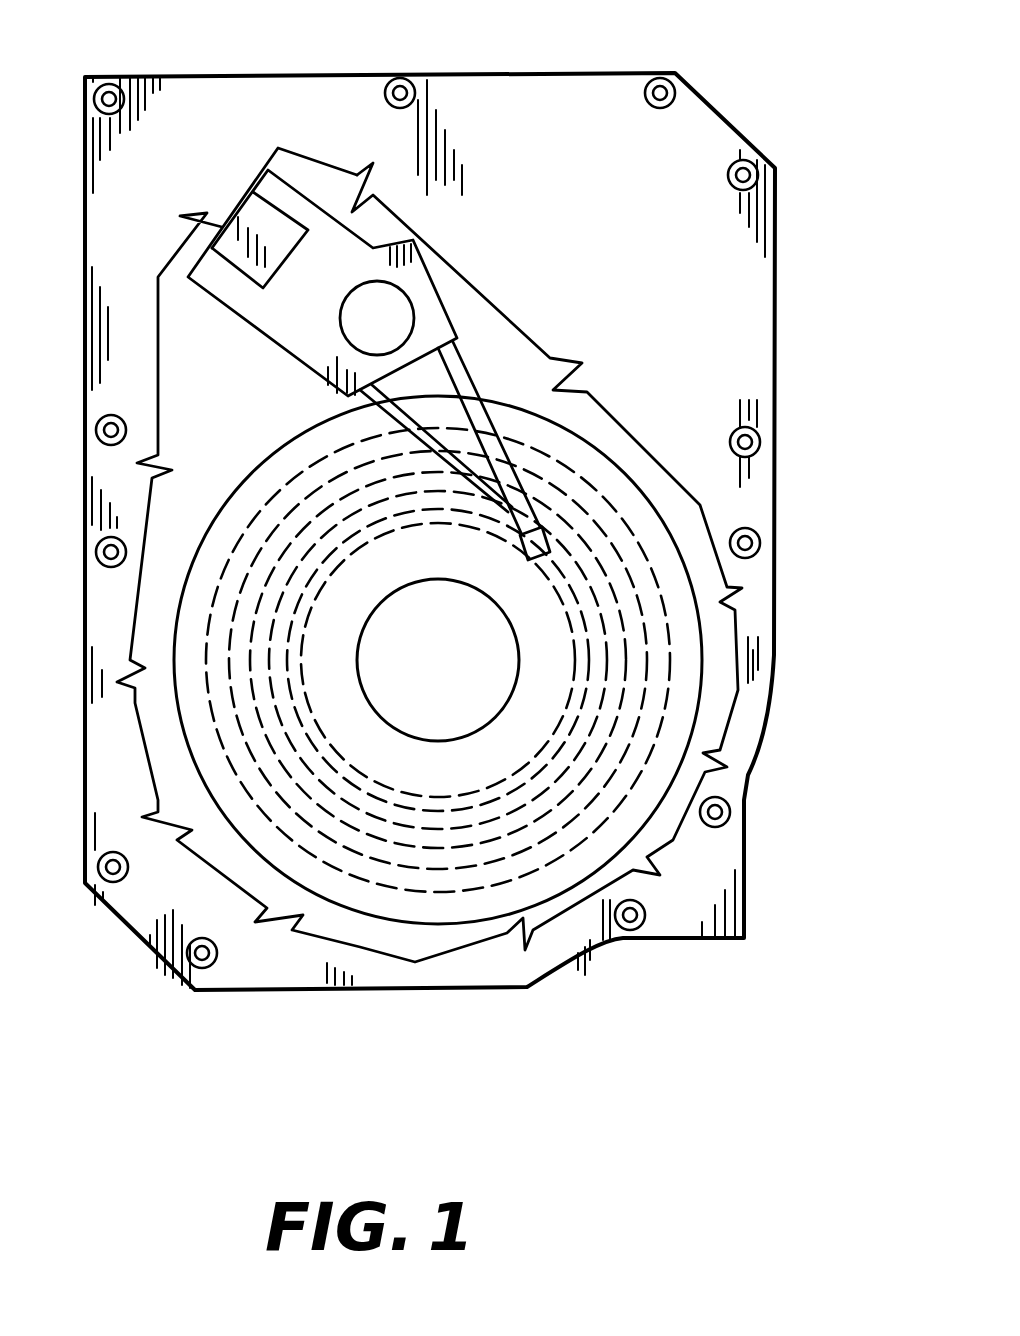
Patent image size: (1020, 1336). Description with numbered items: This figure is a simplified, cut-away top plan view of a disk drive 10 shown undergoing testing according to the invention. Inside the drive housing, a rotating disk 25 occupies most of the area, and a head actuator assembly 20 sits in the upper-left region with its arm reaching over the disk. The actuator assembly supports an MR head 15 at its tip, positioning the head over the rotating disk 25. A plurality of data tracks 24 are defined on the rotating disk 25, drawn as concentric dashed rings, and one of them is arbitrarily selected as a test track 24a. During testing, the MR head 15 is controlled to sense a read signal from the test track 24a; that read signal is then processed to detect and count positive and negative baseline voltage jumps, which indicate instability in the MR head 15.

The disk drive 10 is at (192, 1038).
The MR head 15 is at (540, 547).
The head actuator assembly 20 is at (435, 285).
The data tracks 24 is at (672, 640).
The test track 24a is at (573, 698).
The rotating disk 25 is at (635, 818).